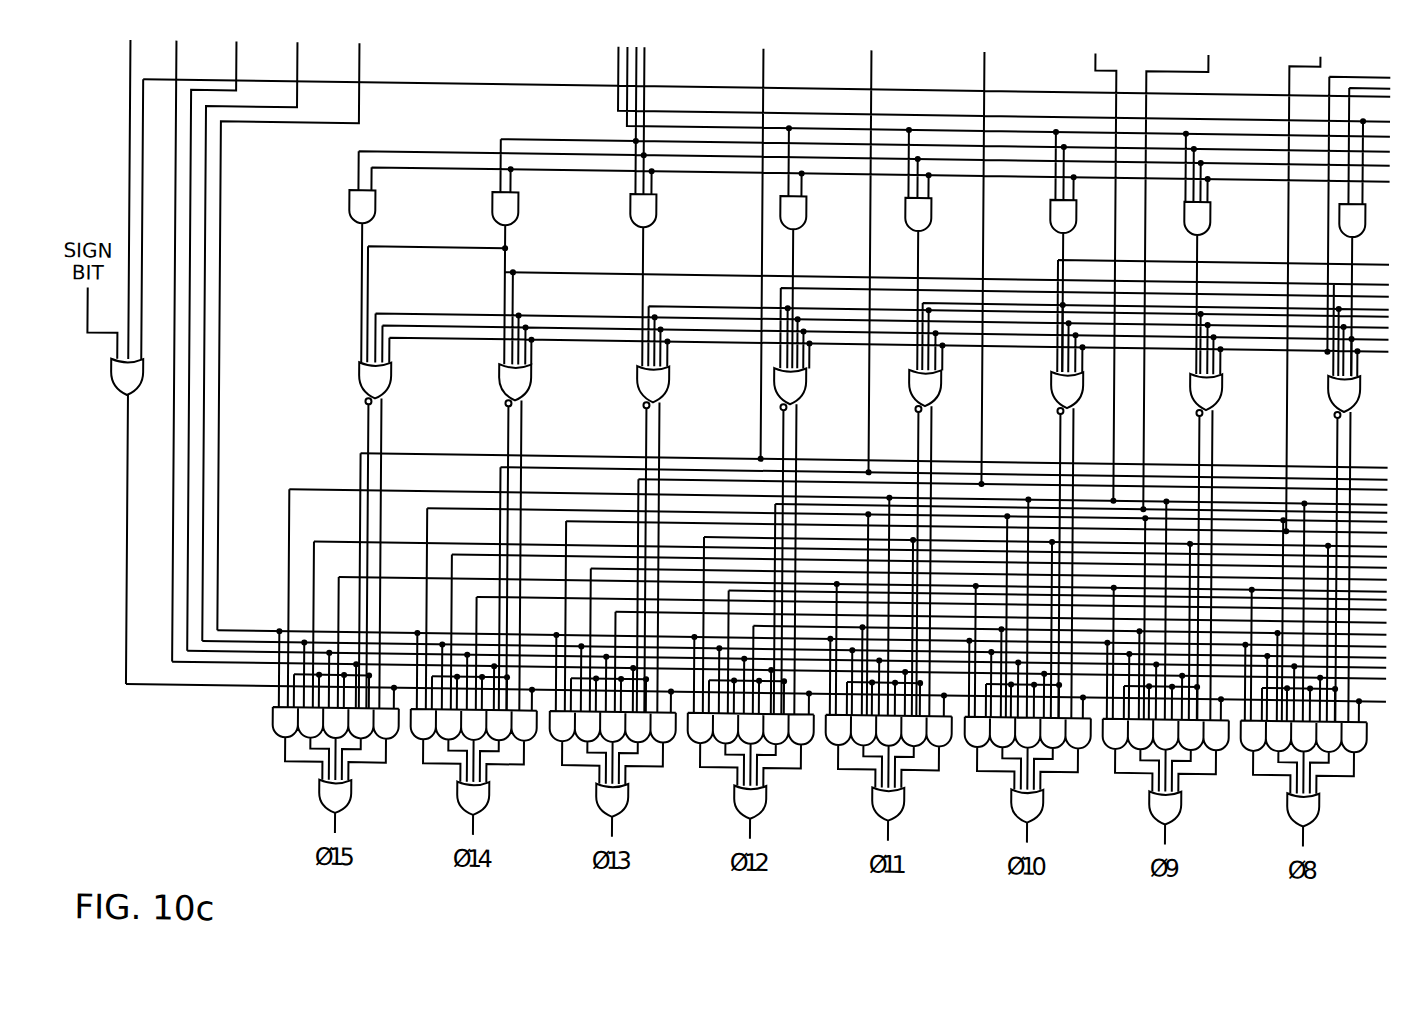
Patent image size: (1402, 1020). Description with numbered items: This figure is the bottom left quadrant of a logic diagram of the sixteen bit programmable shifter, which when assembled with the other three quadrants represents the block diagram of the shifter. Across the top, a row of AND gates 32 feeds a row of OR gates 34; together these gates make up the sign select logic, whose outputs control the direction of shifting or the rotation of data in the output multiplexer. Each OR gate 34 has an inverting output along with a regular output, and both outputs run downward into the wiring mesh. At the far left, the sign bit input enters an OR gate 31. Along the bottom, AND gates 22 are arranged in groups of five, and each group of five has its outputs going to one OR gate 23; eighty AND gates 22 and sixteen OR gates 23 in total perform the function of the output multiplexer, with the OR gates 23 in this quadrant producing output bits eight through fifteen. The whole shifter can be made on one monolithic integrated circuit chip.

The AND gates 22 is at (1234, 752).
The OR gates 23 is at (1290, 797).
The OR gate 31 is at (111, 381).
The AND gates 32 is at (1220, 207).
The OR gates 34 is at (1229, 384).